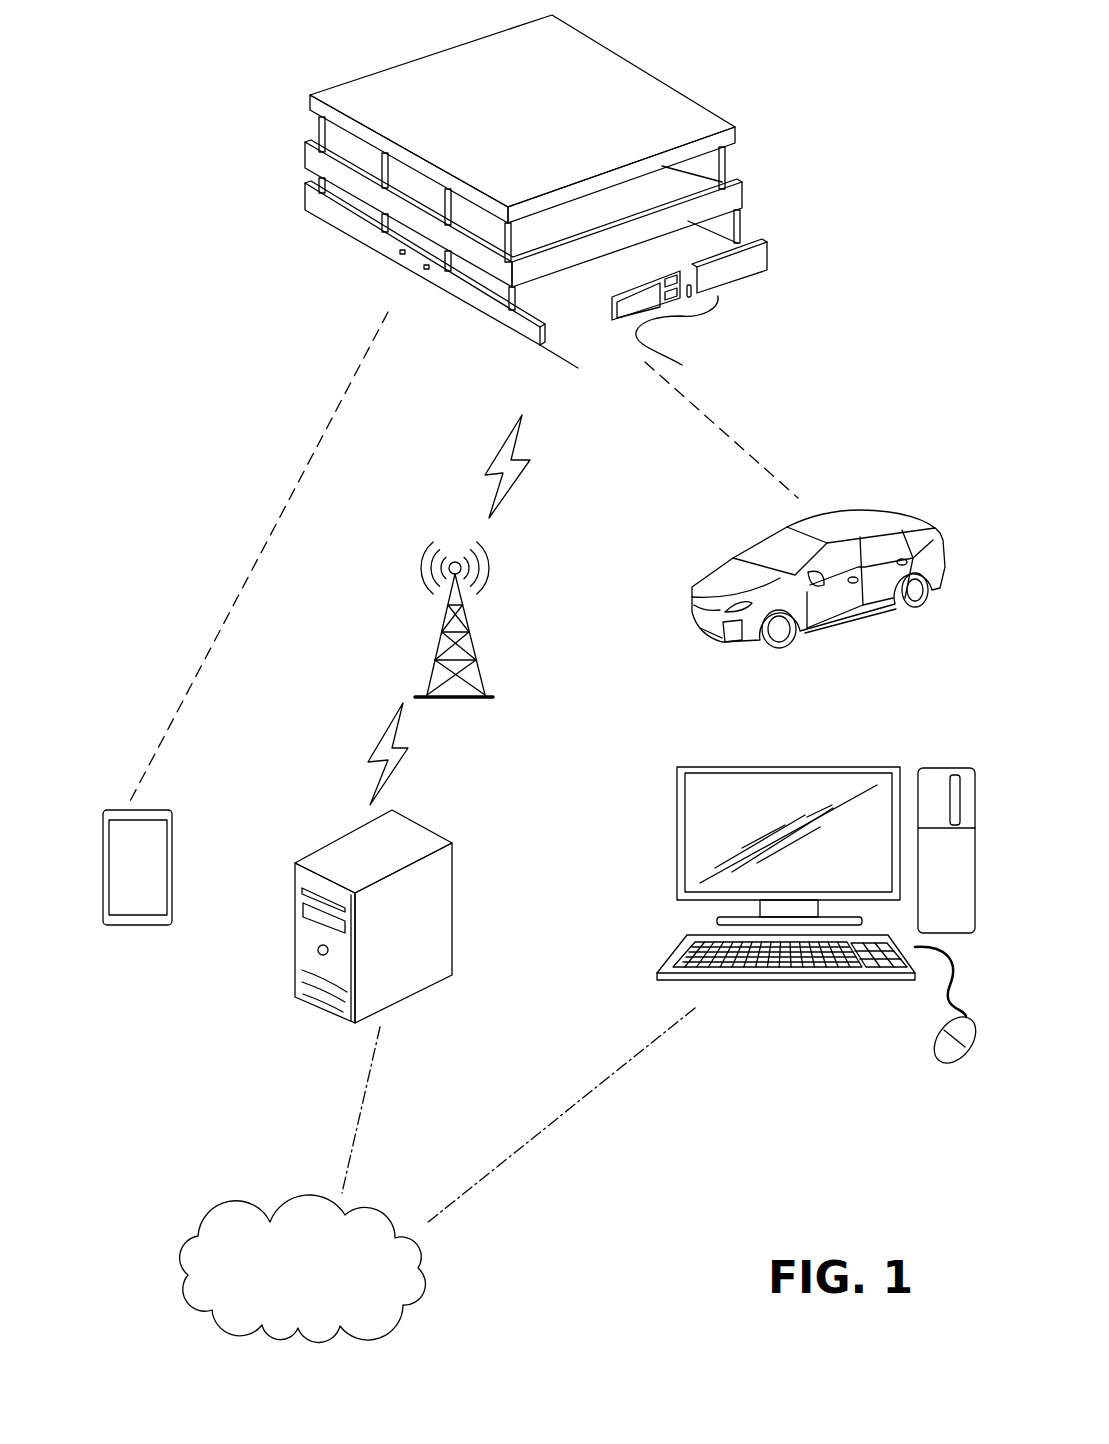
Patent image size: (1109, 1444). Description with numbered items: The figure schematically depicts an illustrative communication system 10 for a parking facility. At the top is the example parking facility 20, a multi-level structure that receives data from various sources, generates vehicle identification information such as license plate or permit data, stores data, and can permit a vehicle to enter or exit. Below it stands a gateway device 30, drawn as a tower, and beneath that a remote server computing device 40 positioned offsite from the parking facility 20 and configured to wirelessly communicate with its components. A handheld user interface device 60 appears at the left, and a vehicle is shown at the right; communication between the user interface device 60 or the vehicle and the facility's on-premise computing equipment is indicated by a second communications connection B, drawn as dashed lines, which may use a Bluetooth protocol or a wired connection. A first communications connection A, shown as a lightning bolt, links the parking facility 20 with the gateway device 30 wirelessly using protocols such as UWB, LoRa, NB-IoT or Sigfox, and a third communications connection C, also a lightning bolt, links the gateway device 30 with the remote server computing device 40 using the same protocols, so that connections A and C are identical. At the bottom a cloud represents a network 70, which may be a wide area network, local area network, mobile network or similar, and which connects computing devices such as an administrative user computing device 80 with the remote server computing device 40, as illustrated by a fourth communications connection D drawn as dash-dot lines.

The communication system 10 is at (943, 98).
The parking facility 20 is at (702, 91).
The gateway device 30 is at (488, 664).
The remote server computing device 40 is at (463, 910).
The user interface device 60 is at (142, 935).
The network 70 is at (210, 1217).
The administrative user computing device 80 is at (828, 997).
The first communications connection A is at (531, 476).
The second communications connection B is at (280, 515).
The third communications connection C is at (371, 750).
The fourth communications connection D is at (363, 1100).